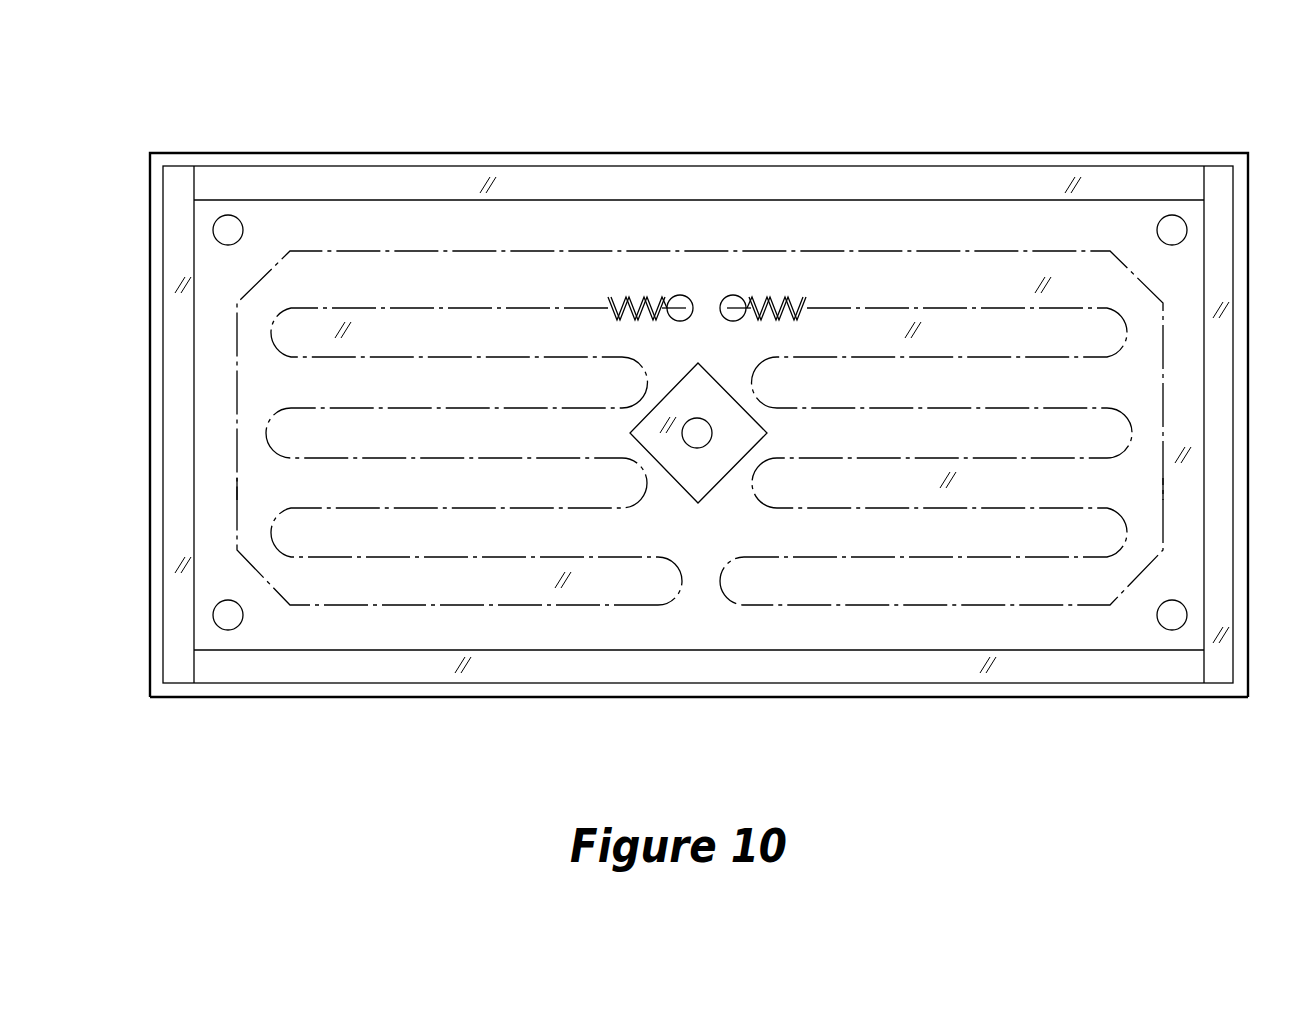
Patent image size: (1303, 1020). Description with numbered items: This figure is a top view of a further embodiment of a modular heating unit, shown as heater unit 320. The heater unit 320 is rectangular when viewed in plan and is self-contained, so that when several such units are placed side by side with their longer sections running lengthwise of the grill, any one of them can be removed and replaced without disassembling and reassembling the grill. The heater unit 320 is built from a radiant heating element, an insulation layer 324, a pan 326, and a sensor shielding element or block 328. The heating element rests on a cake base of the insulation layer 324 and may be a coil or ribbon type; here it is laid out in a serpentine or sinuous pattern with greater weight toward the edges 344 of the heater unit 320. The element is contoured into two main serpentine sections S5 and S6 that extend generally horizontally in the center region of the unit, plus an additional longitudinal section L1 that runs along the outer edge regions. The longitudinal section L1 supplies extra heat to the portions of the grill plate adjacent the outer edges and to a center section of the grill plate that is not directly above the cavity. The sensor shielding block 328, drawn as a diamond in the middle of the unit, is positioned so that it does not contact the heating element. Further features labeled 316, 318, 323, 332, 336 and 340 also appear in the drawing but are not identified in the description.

The mounting holes 316 is at (228, 215).
The electrical terminals 318 is at (680, 295).
The heater unit 320 is at (822, 110).
The heating element outline 323 is at (343, 251).
The insulation layer 324 is at (535, 187).
The pan 326 is at (1248, 153).
The sensor shielding block 328 is at (694, 497).
The bottom edge 332 is at (541, 697).
The side strips 336 is at (175, 195).
The central hole 340 is at (697, 418).
The edges 344 is at (150, 393).
The longitudinal section L1 is at (237, 478).
The first main serpentine section S5 is at (438, 408).
The second main serpentine section S6 is at (885, 408).